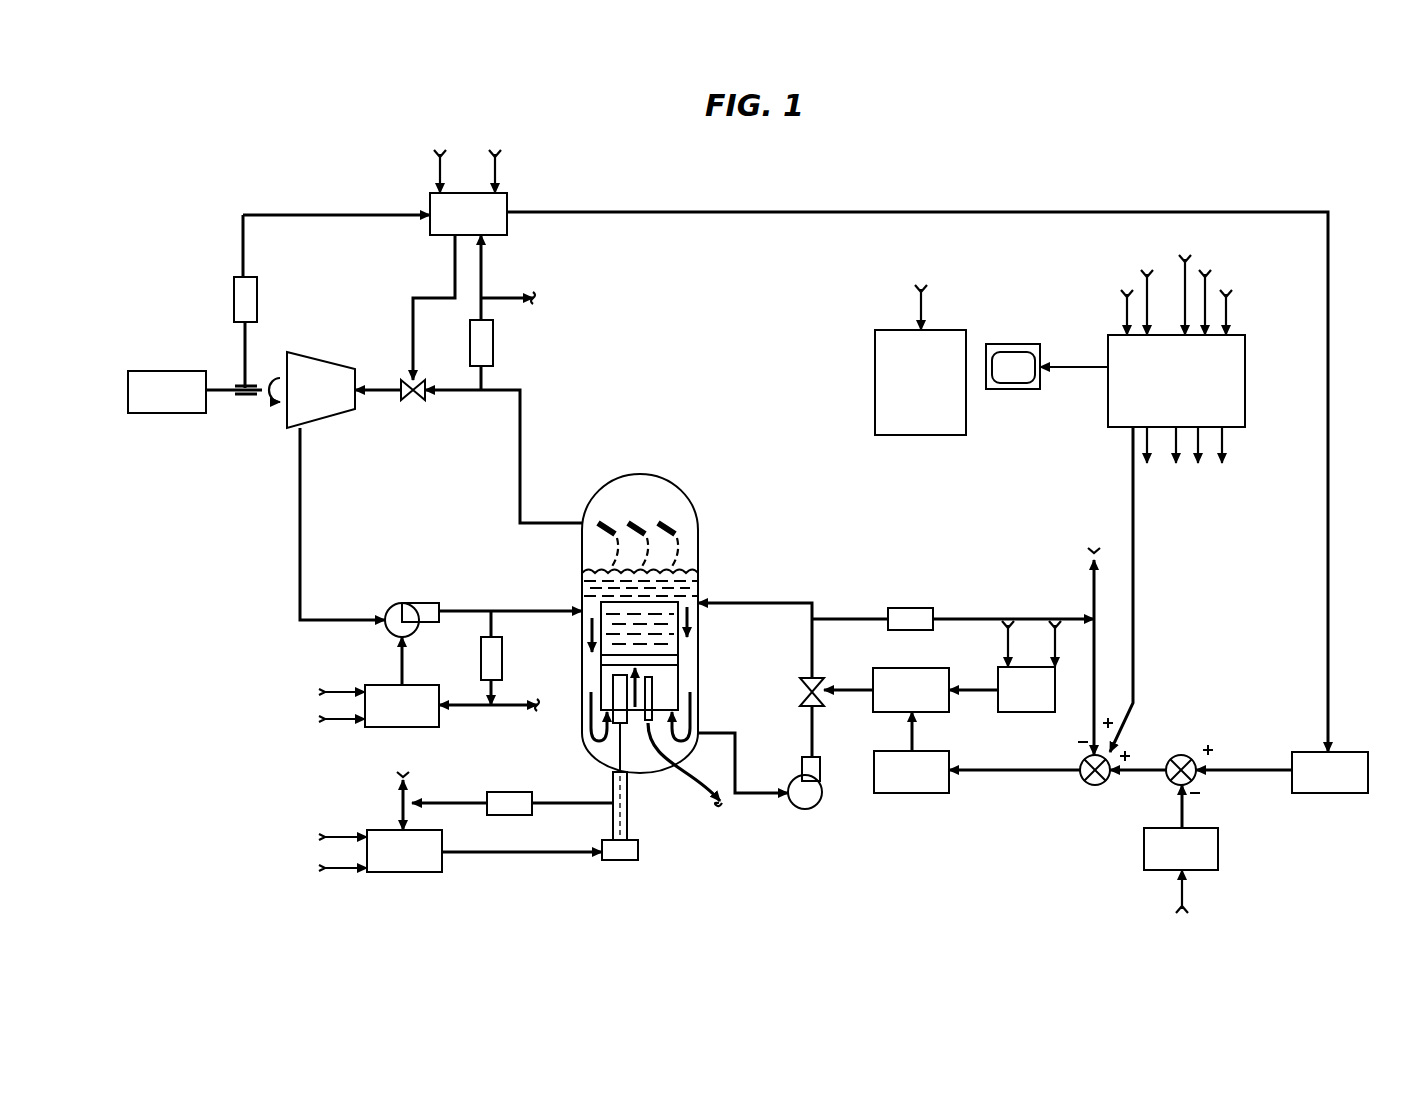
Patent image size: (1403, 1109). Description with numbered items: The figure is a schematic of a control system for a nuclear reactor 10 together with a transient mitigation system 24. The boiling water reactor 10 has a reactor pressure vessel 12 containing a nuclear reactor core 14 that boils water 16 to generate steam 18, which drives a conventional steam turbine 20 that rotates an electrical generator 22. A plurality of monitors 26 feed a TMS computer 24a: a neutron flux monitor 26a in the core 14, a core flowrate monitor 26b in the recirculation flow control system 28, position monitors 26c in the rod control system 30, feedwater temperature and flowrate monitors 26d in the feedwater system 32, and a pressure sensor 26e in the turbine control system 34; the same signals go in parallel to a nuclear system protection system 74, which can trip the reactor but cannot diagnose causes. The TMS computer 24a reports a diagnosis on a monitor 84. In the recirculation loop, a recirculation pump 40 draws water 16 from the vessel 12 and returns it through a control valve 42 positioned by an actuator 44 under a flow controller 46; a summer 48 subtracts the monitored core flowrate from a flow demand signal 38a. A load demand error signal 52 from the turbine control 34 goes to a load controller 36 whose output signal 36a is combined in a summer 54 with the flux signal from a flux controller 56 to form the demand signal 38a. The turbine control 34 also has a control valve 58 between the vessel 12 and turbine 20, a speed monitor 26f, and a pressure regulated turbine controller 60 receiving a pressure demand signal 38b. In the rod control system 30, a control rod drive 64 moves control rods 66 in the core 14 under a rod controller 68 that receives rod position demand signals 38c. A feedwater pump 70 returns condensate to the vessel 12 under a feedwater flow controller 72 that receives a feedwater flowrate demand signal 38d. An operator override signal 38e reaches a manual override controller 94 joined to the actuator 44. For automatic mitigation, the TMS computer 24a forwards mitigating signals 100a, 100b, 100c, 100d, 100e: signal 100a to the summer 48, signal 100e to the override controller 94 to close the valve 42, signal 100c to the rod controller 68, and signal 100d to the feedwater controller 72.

The nuclear reactor 10 is at (599, 630).
The reactor pressure vessel 12 is at (616, 478).
The nuclear reactor core 14 is at (678, 639).
The water 16 is at (580, 599).
The steam 18 is at (680, 540).
The steam turbine 20 is at (328, 400).
The electrical generator 22 is at (177, 401).
The transient mitigation system 24 is at (1208, 435).
The TMS computer 24a is at (1245, 349).
The monitors 26 is at (916, 298).
The neutron flux monitor 26a is at (1125, 300).
The core flowrate monitor 26b is at (1145, 286).
The position monitors 26c is at (1187, 270).
The feedwater temperature and flowrate monitors 26d is at (1207, 286).
The pressure sensor 26e is at (494, 341).
The speed monitor 26f is at (232, 300).
The recirculation flow control system 28 is at (864, 769).
The rod control system 30 is at (484, 848).
The feedwater system 32 is at (373, 705).
The turbine control system 34 is at (436, 188).
The load controller 36 is at (1340, 784).
The output signal 36a is at (1267, 772).
The flow demand signal 38a is at (1142, 772).
The pressure demand signal 38b is at (501, 170).
The rod position demand signal 38c is at (340, 870).
The feedwater flowrate demand signal 38d is at (338, 690).
The override signal 38e is at (1000, 638).
The recirculation pump 40 is at (790, 806).
The control valve 42 is at (803, 692).
The actuator 44 is at (921, 701).
The flow controller 46 is at (921, 783).
The summer 48 is at (1083, 785).
The load demand error signal 52 is at (803, 212).
The summer 54 is at (1188, 757).
The flux controller 56 is at (1192, 860).
The control valve 58 is at (418, 399).
The pressure regulated turbine controller 60 is at (478, 225).
The control rod drive 64 is at (628, 813).
The control rods 66 is at (668, 757).
The rod controller 68 is at (414, 862).
The feedwater pump 70 is at (403, 603).
The feedwater flow controller 72 is at (412, 717).
The nuclear system protection system 74 is at (920, 436).
The monitor 84 is at (1012, 344).
The manual override controller 94 is at (1027, 712).
The mitigating signal 100a is at (1131, 508).
The mitigating signal 100b is at (448, 162).
The mitigating signal 100c is at (1176, 463).
The mitigating signal 100d is at (1198, 463).
The mitigating signal 100e is at (1222, 463).